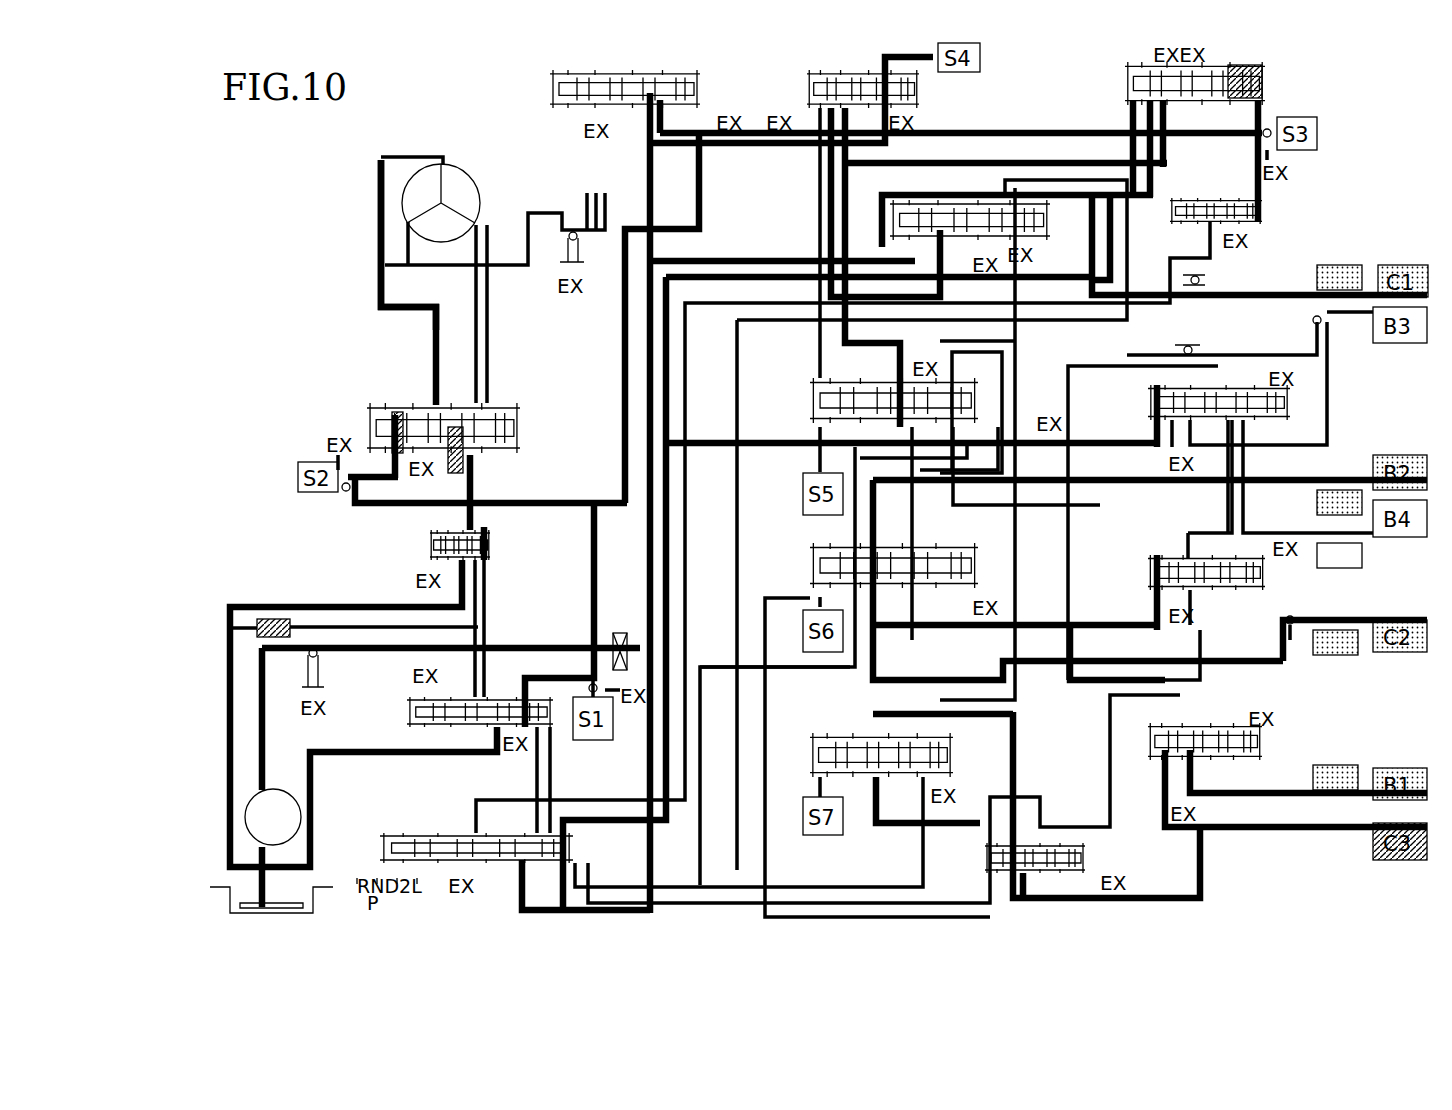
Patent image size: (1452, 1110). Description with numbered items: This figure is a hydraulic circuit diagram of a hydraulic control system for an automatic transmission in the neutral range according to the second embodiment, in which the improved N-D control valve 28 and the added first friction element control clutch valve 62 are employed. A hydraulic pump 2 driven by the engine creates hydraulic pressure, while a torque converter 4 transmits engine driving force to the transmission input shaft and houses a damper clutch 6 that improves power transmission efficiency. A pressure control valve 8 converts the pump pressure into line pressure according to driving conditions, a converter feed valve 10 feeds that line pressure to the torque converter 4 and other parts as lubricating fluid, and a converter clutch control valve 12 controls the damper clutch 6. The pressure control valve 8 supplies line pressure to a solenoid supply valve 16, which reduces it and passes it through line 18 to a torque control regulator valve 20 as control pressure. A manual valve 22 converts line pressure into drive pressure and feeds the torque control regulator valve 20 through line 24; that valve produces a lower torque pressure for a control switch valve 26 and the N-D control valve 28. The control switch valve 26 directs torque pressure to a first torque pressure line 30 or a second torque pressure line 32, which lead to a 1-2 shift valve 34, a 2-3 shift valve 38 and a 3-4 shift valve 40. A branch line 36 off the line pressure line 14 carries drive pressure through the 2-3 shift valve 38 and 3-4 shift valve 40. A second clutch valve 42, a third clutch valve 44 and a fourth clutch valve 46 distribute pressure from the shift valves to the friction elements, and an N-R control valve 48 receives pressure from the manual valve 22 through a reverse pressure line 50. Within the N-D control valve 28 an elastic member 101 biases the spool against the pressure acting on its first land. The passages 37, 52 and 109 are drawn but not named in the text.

The hydraulic pump 2 is at (278, 790).
The torque converter 4 is at (464, 155).
The damper clutch 6 is at (378, 181).
The pressure control valve 8 is at (400, 710).
The converter feed valve 10 is at (495, 548).
The converter clutch control valve 12 is at (525, 422).
The line pressure line 14 is at (540, 645).
The solenoid supply valve 16 is at (708, 85).
The line 18 is at (1015, 130).
The torque control regulator valve 20 is at (1280, 90).
The manual valve 22 is at (417, 828).
The line 24 is at (622, 356).
The control switch valve 26 is at (925, 95).
The N-D control valve 28 is at (1050, 230).
The first torque pressure line 30 is at (818, 225).
The second torque pressure line 32 is at (848, 218).
The 1-2 shift valve 34 is at (806, 406).
The branch line 36 is at (720, 700).
The oil passage 37 is at (1040, 160).
The 2-3 shift valve 38 is at (806, 574).
The 3-4 shift valve 40 is at (958, 758).
The second clutch valve 42 is at (1145, 397).
The third clutch valve 44 is at (1145, 585).
The fourth clutch valve 46 is at (1275, 745).
The N-R control valve 48 is at (1275, 221).
The reverse pressure line 50 is at (688, 384).
The oil passage 52 is at (1080, 368).
The first friction element control clutch valve 62 is at (1112, 857).
The elastic member 101 is at (1332, 405).
The oil passage 109 is at (1185, 535).